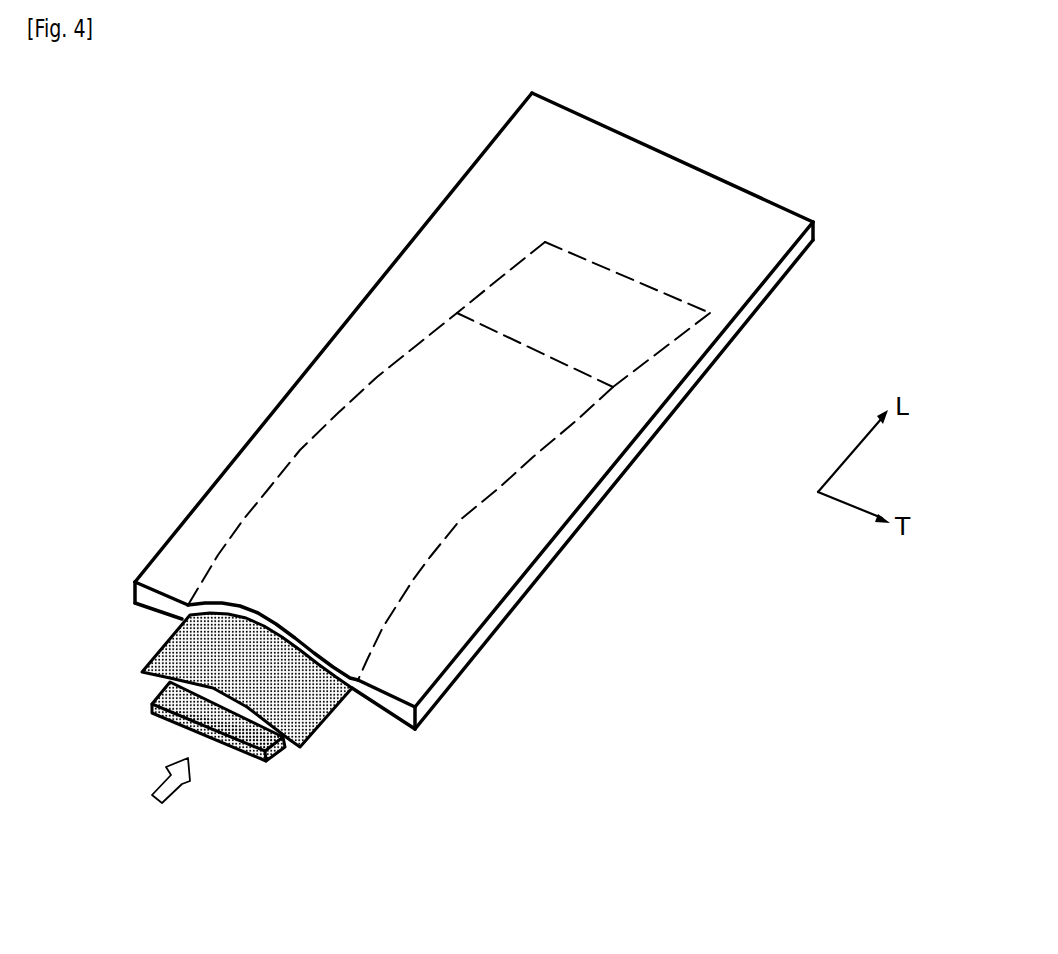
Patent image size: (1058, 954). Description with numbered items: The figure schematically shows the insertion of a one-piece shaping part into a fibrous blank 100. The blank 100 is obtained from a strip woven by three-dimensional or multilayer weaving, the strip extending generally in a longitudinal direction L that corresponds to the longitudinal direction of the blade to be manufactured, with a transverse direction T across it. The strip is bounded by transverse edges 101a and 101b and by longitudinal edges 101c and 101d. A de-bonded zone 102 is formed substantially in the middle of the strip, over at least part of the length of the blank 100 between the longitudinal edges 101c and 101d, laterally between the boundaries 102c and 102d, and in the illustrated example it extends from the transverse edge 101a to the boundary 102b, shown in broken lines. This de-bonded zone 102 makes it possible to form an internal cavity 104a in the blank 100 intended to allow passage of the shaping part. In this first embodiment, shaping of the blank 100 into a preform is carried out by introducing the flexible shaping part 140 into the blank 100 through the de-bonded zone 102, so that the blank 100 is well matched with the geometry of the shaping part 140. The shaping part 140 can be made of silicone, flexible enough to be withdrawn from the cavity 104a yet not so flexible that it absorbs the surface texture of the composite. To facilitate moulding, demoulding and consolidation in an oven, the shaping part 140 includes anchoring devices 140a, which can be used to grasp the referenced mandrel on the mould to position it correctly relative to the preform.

The fibrous blank 100 is at (483, 411).
The transverse edge 101a is at (149, 598).
The transverse edge 101b is at (693, 166).
The longitudinal edge 101c is at (310, 367).
The longitudinal edge 101d is at (694, 385).
The de-bonded zone 102 is at (522, 456).
The boundary 102b is at (633, 288).
The boundary 102c is at (478, 293).
The boundary 102d is at (520, 463).
The cavity 104a is at (280, 622).
The shaping part 140 is at (284, 717).
The anchoring devices 140a is at (258, 741).